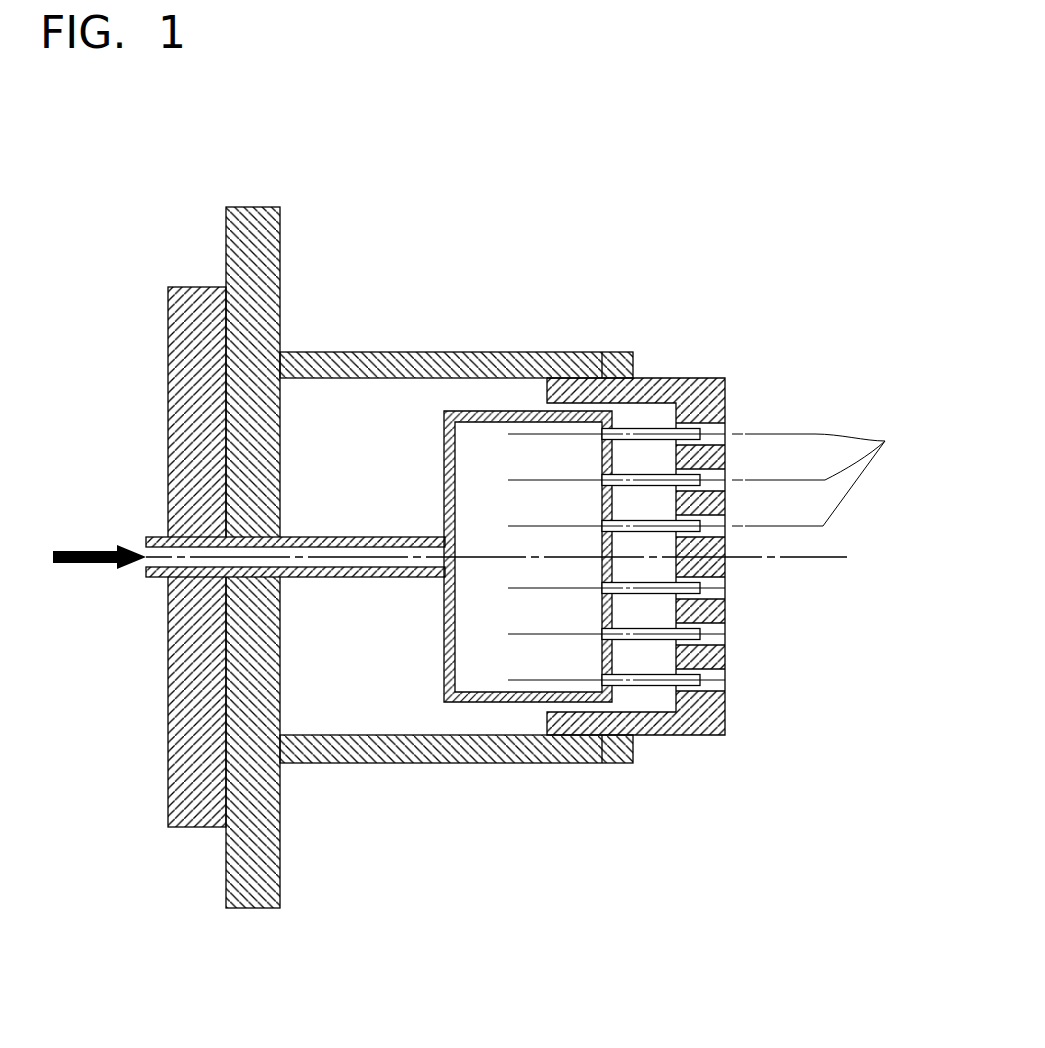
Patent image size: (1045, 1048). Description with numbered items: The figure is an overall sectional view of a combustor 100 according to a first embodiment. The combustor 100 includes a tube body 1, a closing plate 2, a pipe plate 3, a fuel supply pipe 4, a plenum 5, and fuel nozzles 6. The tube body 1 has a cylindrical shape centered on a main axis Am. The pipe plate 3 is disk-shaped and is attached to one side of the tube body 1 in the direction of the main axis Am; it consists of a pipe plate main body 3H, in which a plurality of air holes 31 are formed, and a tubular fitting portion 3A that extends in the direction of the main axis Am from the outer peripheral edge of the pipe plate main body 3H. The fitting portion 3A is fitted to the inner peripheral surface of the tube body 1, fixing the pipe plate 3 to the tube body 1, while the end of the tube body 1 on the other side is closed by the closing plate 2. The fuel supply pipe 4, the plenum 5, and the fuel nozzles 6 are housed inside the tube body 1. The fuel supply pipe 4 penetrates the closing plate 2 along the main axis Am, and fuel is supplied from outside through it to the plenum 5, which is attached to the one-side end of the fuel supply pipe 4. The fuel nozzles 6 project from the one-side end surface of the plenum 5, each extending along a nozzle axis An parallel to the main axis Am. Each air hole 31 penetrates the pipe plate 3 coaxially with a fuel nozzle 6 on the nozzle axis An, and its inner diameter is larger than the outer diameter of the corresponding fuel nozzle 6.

The combustor 100 is at (77, 160).
The tube body 1 is at (429, 557).
The closing plate 2 is at (185, 390).
The pipe plate 3 is at (712, 489).
The fitting portion 3A is at (601, 375).
The pipe plate main body 3H is at (725, 397).
The air hole 31 is at (725, 645).
The fuel supply pipe 4 is at (355, 578).
The plenum 5 is at (508, 658).
The fuel nozzle 6 is at (660, 636).
The nozzle axis An is at (718, 552).
The main axis Am is at (847, 557).